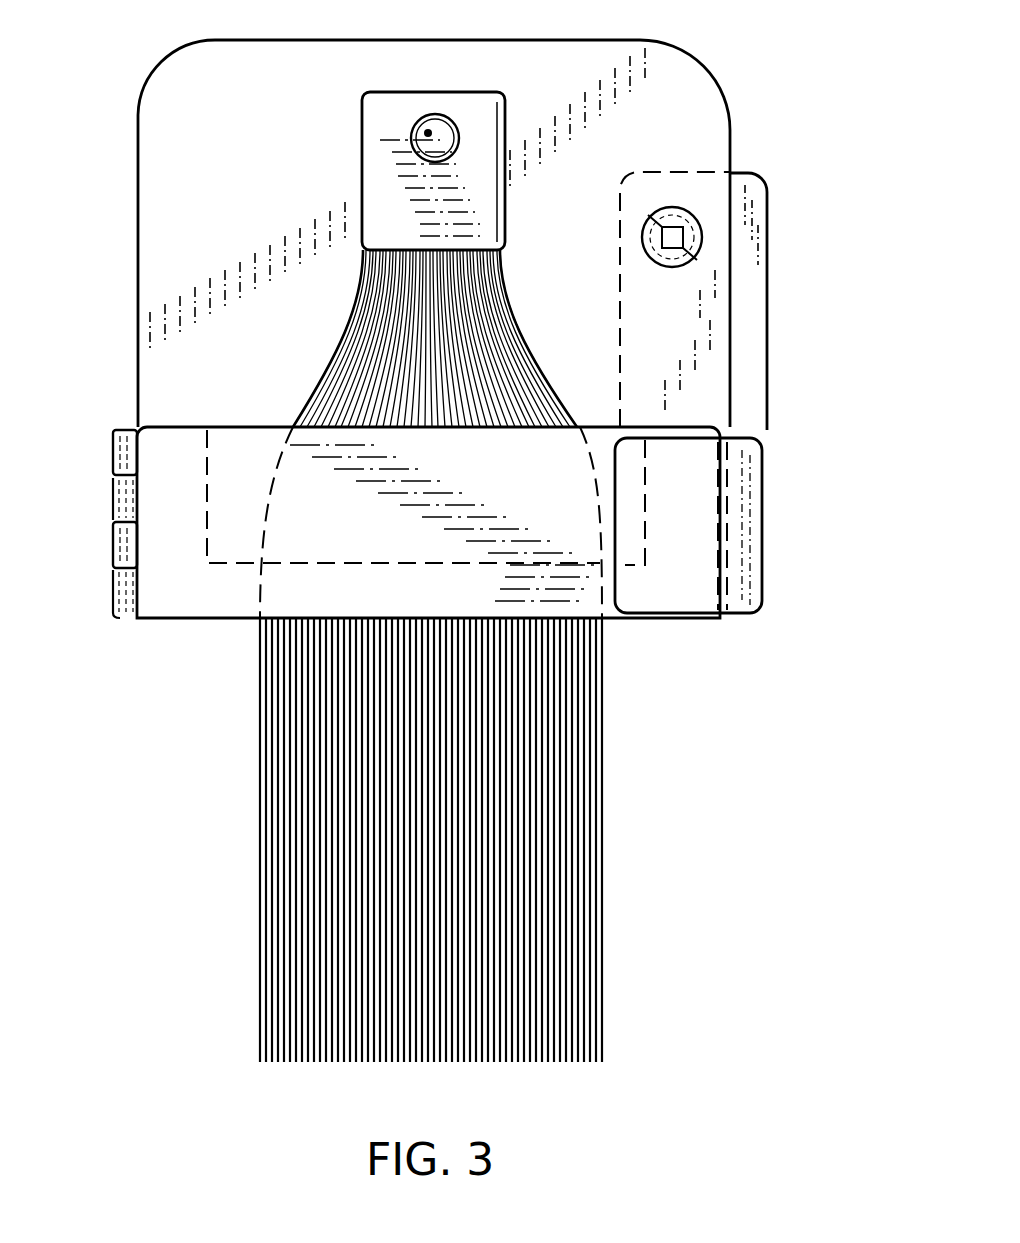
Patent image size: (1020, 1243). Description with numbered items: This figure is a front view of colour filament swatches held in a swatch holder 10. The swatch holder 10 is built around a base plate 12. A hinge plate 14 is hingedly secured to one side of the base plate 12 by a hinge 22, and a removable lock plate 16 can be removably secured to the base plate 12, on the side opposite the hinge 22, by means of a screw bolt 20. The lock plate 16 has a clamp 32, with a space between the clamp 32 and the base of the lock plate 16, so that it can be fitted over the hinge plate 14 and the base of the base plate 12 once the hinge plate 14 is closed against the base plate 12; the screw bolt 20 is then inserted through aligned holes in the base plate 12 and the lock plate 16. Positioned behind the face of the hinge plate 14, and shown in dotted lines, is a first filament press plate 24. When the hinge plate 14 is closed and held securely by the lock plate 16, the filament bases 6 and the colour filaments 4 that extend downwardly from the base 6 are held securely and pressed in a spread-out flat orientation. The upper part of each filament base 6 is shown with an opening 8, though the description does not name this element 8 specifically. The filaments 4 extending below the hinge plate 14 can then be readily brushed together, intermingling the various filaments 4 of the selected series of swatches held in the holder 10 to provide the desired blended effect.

The colour filaments 4 is at (323, 360).
The filament base 6 is at (375, 184).
The locating hole 8 is at (422, 128).
The swatch holder 10 is at (796, 397).
The base plate 12 is at (678, 108).
The hinge plate 14 is at (202, 596).
The removable lock plate 16 is at (767, 285).
The screw bolt 20 is at (648, 233).
The hinge 22 is at (114, 531).
The first filament press plate 24 is at (230, 466).
The clamp 32 is at (683, 590).